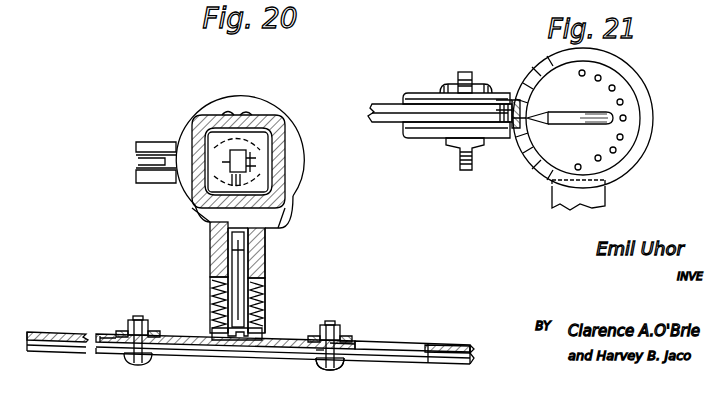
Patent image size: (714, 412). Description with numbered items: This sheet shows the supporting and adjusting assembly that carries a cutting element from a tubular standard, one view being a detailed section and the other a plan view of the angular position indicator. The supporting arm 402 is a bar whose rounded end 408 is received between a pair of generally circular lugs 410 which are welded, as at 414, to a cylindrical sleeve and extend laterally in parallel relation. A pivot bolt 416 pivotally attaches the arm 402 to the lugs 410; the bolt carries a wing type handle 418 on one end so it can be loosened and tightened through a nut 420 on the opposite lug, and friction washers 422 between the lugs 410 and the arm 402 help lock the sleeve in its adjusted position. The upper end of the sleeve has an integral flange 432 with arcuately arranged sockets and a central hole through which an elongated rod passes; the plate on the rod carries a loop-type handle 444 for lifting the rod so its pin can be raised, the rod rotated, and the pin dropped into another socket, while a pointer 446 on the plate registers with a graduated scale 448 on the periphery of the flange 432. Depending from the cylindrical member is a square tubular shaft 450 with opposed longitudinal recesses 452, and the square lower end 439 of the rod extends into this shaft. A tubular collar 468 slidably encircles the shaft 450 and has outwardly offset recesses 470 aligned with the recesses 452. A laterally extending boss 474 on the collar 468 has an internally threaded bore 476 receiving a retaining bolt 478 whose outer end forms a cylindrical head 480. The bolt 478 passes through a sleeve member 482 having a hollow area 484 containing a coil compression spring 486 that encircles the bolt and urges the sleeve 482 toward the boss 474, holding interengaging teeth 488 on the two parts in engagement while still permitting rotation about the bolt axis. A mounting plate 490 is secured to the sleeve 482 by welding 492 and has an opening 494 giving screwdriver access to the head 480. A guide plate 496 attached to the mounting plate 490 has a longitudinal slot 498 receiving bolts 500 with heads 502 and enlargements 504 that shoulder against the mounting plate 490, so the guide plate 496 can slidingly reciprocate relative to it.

In FIG. 20, the supporting arm 402 is at (140, 161).
In FIG. 21, the supporting arm 402 is at (380, 116).
In FIG. 21, the rounded end 408 is at (508, 138).
In FIG. 20, the lugs 410 is at (150, 145).
In FIG. 21, the lugs 410 is at (410, 95).
In FIG. 21, the weld 414 is at (512, 102).
In FIG. 21, the pivot bolt 416 is at (465, 72).
In FIG. 21, the wing type handle 418 is at (460, 158).
In FIG. 21, the nut 420 is at (448, 90).
In FIG. 21, the friction washers 422 is at (440, 128).
In FIG. 21, the flange 432 is at (645, 102).
In FIG. 20, the square lower end 439 is at (283, 150).
In FIG. 21, the loop-type handle 444 is at (598, 113).
In FIG. 21, the pointer 446 is at (548, 118).
In FIG. 21, the graduated scale 448 is at (540, 168).
In FIG. 20, the square tubular shaft 450 is at (270, 118).
In FIG. 20, the recesses 452 is at (246, 115).
In FIG. 20, the tubular collar 468 is at (284, 176).
In FIG. 20, the offset recesses 470 is at (229, 115).
In FIG. 20, the boss 474 is at (205, 222).
In FIG. 21, the boss 474 is at (606, 192).
In FIG. 20, the threaded bore 476 is at (266, 232).
In FIG. 20, the retaining bolt 478 is at (240, 276).
In FIG. 20, the cylindrical head 480 is at (244, 340).
In FIG. 20, the sleeve member 482 is at (212, 262).
In FIG. 20, the hollow area 484 is at (212, 290).
In FIG. 20, the coil compression spring 486 is at (252, 312).
In FIG. 20, the teeth 488 is at (212, 242).
In FIG. 20, the mounting plate 490 is at (356, 343).
In FIG. 20, the welding 492 is at (210, 332).
In FIG. 20, the opening 494 is at (222, 345).
In FIG. 20, the guide plate 496 is at (455, 362).
In FIG. 20, the longitudinal slot 498 is at (432, 350).
In FIG. 20, the bolts 500 is at (332, 322).
In FIG. 20, the heads 502 is at (338, 366).
In FIG. 20, the enlargements 504 is at (318, 352).